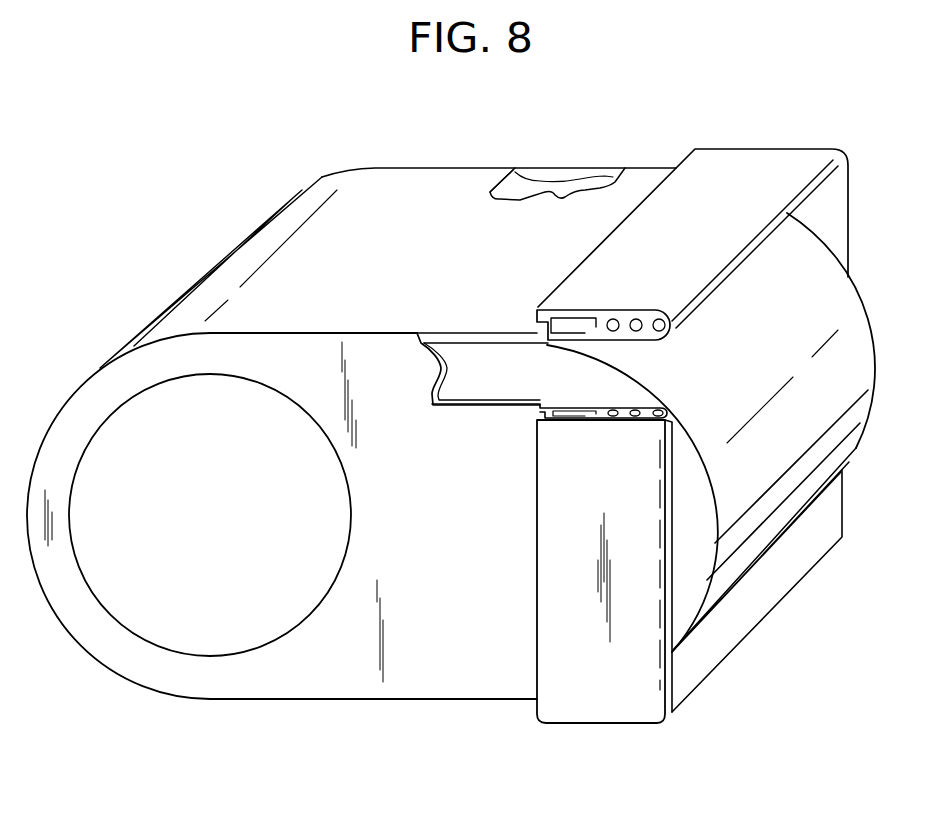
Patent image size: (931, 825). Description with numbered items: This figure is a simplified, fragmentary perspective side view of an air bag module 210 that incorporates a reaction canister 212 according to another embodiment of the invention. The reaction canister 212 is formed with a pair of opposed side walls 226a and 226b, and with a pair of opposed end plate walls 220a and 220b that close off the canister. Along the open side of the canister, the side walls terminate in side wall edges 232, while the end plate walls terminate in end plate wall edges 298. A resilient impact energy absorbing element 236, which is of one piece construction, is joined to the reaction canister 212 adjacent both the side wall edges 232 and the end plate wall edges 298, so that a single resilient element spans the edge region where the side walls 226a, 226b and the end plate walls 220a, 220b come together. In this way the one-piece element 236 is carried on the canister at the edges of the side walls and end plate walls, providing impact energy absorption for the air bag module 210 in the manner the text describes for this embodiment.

The air bag module 210 is at (172, 192).
The reaction canister 212 is at (349, 170).
The end plate wall 220a is at (458, 563).
The end plate wall 220b is at (557, 172).
The side wall 226a is at (413, 700).
The side wall 226b is at (393, 265).
The side wall edges 232 is at (555, 330).
The resilient impact energy absorbing element 236 is at (775, 165).
The end plate wall edges 298 is at (573, 413).